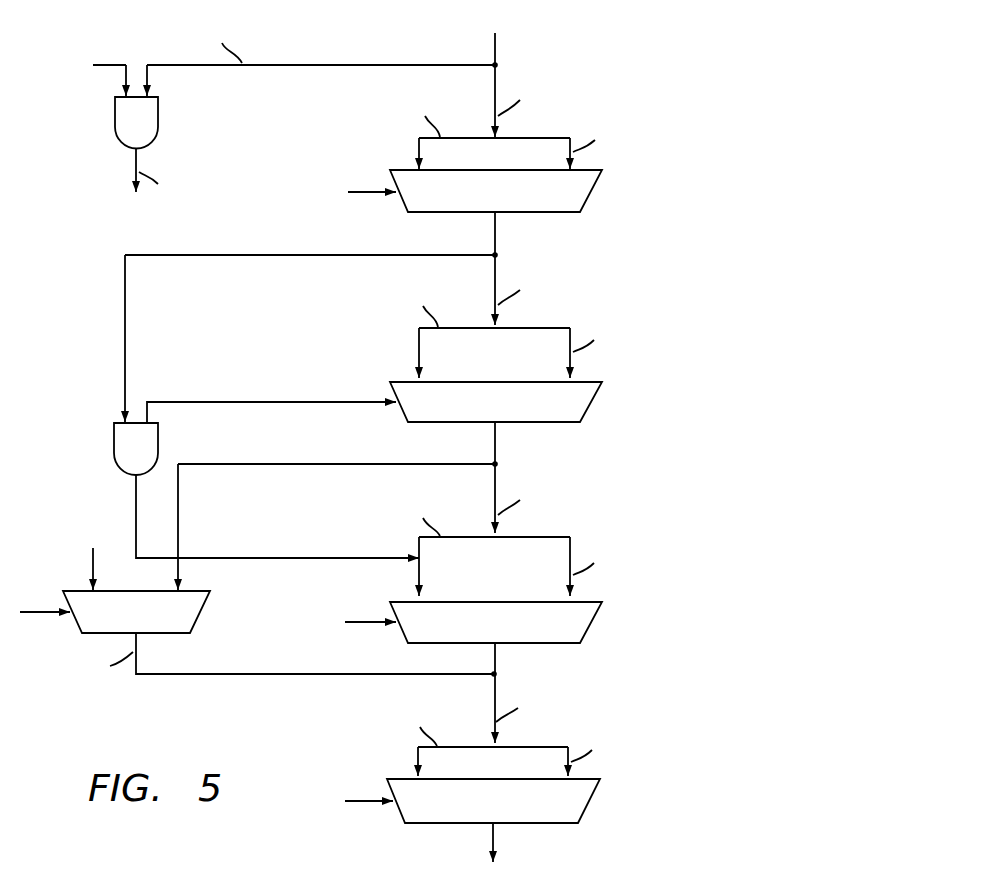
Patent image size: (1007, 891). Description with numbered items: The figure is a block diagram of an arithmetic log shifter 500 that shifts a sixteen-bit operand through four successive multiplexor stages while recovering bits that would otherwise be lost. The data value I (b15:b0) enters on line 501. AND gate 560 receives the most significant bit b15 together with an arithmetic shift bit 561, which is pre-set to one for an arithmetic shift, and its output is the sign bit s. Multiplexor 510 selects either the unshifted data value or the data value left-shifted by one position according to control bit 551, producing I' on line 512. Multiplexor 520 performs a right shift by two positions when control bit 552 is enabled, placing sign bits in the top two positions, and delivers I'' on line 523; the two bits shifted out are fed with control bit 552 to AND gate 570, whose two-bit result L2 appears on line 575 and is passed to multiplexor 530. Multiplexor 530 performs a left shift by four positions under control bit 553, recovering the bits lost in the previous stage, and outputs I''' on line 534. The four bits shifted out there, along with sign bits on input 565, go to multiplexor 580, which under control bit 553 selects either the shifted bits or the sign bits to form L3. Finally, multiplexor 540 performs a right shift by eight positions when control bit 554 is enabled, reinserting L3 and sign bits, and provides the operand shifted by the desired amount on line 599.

The arithmetic log shifter 500 is at (640, 52).
The data value input line 501 is at (498, 49).
The multiplexor 510 is at (596, 195).
The output line 512 is at (498, 225).
The multiplexor 520 is at (596, 405).
The output line 523 is at (498, 432).
The multiplexor 530 is at (596, 625).
The output line 534 is at (497, 655).
The multiplexor 540 is at (594, 805).
The control bit 551 is at (371, 194).
The control bit 552 is at (241, 400).
The control bit 553 is at (372, 619).
The control bit 554 is at (367, 805).
The AND gate 560 is at (113, 118).
The arithmetic shift bit 561 is at (110, 63).
The sign bit input 565 is at (89, 569).
The AND gate 570 is at (112, 443).
The output line 575 is at (134, 500).
The multiplexor 580 is at (203, 612).
The output line 599 is at (496, 843).